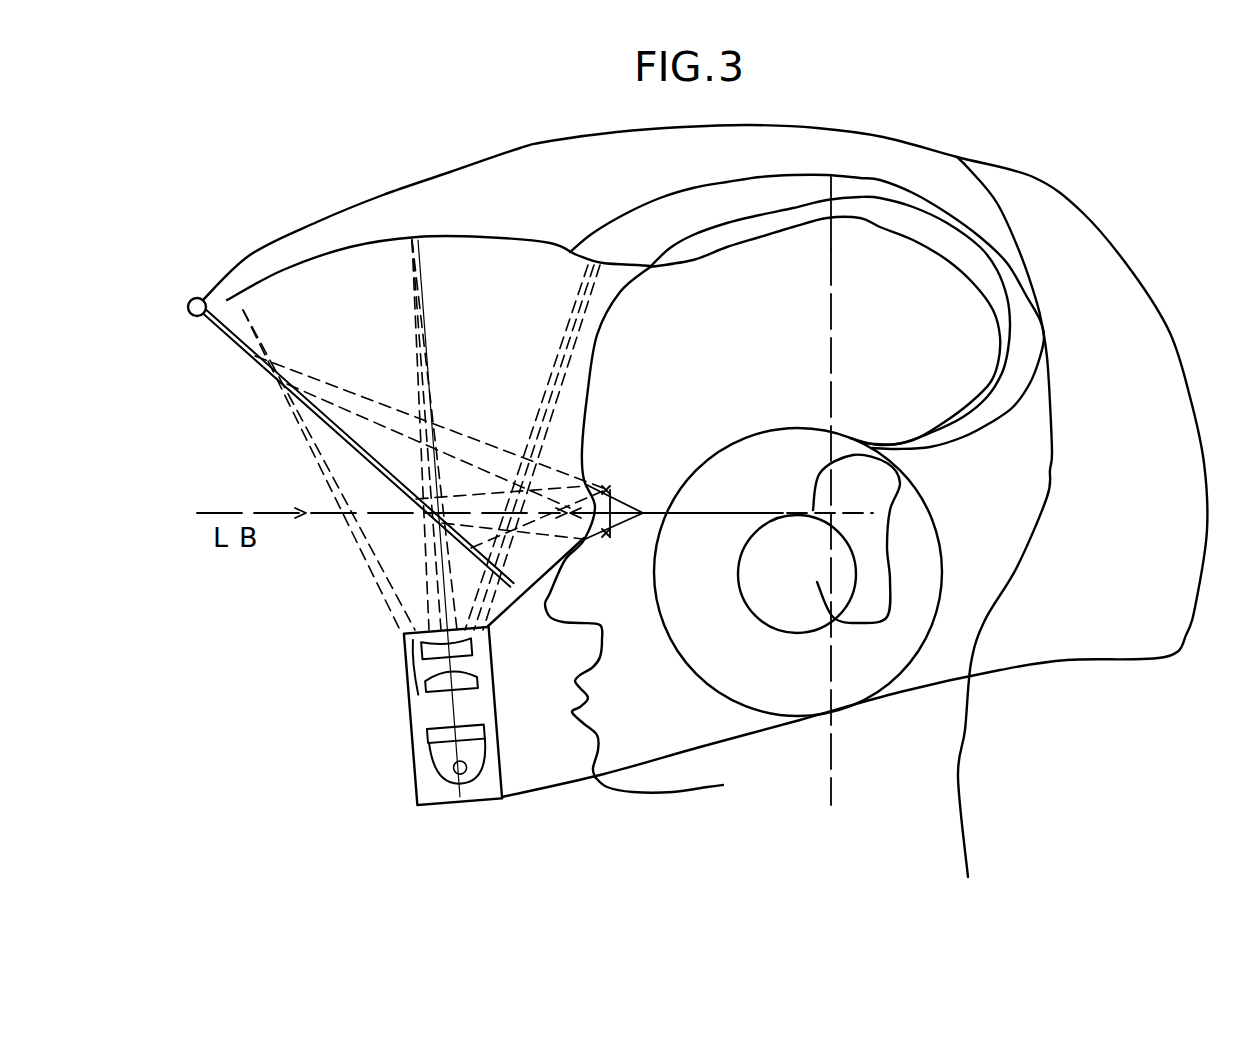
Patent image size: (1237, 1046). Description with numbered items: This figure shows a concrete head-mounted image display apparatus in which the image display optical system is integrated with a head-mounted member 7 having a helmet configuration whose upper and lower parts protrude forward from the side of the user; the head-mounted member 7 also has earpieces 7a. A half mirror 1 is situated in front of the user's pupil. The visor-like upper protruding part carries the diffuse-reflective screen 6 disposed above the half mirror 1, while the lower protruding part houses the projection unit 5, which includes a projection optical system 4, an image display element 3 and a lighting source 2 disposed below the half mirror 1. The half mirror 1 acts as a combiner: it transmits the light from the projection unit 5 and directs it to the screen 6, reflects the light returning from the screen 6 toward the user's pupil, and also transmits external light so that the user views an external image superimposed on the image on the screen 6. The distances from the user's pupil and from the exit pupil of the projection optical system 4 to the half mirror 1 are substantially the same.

The half mirror 1 is at (222, 331).
The lighting source 2 is at (416, 766).
The image display element 3 is at (427, 729).
The projection optical system 4 is at (408, 668).
The projection unit 5 is at (402, 719).
The diffuse-reflective screen 6 is at (345, 250).
The head-mounted member 7 is at (1013, 643).
The earpieces 7a is at (813, 703).